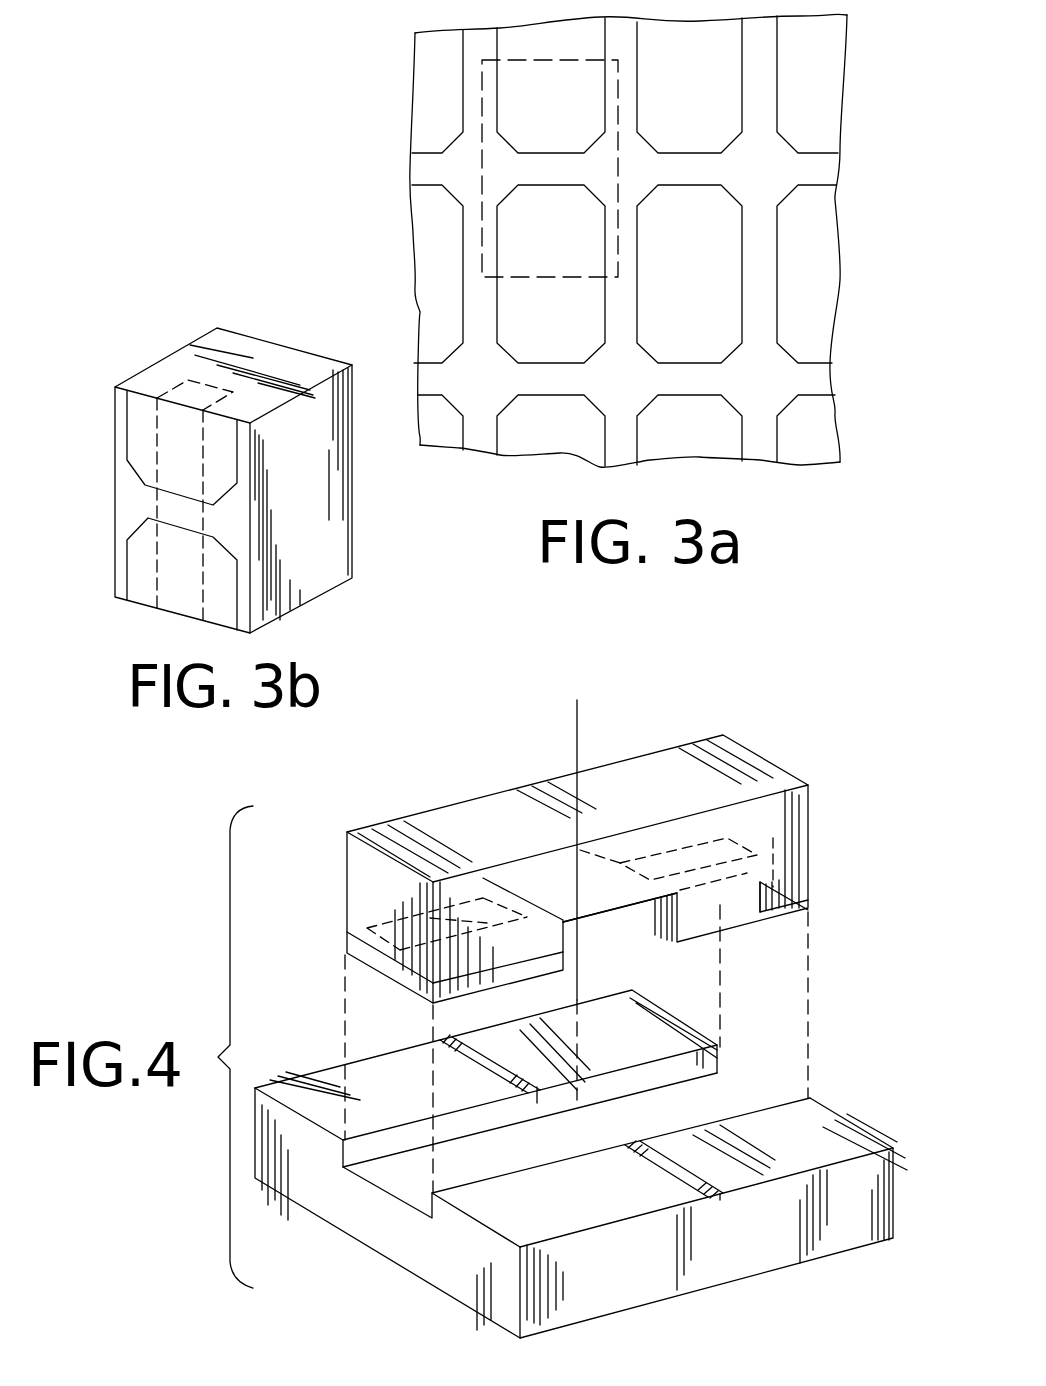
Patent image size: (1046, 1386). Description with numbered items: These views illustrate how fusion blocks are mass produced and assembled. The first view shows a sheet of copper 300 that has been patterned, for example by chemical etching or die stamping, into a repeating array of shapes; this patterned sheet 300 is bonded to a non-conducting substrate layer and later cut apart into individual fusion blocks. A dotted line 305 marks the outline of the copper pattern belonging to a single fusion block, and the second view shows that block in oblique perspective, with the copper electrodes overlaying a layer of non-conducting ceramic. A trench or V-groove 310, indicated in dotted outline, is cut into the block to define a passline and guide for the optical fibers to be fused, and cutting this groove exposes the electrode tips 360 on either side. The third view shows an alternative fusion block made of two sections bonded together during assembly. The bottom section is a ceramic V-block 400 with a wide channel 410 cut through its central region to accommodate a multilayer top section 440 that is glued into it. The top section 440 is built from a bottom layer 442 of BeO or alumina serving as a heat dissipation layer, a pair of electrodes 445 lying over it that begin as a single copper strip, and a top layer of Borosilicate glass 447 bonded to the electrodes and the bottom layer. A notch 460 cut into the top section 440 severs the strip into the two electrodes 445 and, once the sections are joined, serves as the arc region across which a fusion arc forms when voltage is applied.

In FIG. 3A, the sheet of copper 300 is at (757, 443).
In FIG. 3A, the dotted line 305 is at (482, 248).
In FIG. 3B, the trench or V-groove 310 is at (188, 395).
In FIG. 3B, the electrode tips 360 is at (147, 501).
In FIG. 4, the ceramic V-block 400 is at (858, 1143).
In FIG. 4, the wide channel 410 is at (722, 1102).
In FIG. 4, the multilayer top section 440 is at (587, 847).
In FIG. 4, the bottom layer 442 is at (755, 910).
In FIG. 4, the pair of electrodes 445 is at (805, 862).
In FIG. 4, the top layer of Borosilicate glass 447 is at (628, 787).
In FIG. 4, the notch 460 is at (607, 918).